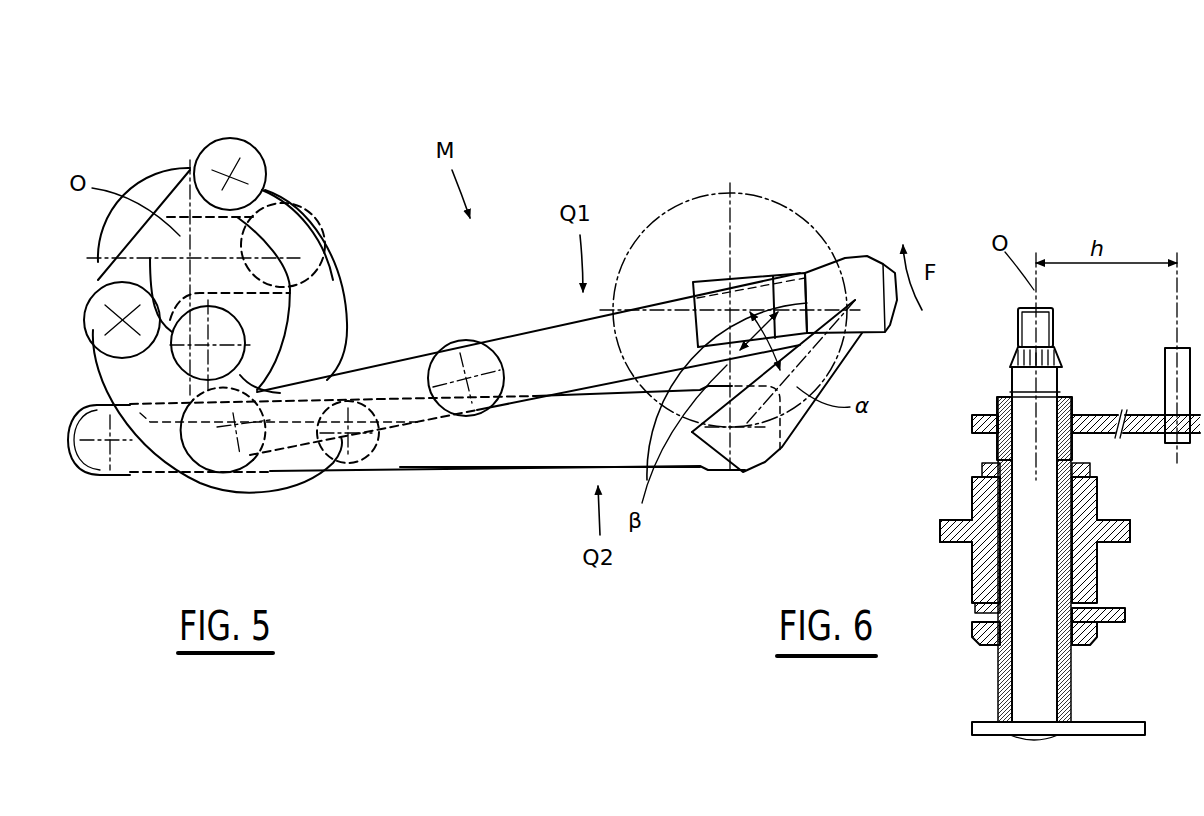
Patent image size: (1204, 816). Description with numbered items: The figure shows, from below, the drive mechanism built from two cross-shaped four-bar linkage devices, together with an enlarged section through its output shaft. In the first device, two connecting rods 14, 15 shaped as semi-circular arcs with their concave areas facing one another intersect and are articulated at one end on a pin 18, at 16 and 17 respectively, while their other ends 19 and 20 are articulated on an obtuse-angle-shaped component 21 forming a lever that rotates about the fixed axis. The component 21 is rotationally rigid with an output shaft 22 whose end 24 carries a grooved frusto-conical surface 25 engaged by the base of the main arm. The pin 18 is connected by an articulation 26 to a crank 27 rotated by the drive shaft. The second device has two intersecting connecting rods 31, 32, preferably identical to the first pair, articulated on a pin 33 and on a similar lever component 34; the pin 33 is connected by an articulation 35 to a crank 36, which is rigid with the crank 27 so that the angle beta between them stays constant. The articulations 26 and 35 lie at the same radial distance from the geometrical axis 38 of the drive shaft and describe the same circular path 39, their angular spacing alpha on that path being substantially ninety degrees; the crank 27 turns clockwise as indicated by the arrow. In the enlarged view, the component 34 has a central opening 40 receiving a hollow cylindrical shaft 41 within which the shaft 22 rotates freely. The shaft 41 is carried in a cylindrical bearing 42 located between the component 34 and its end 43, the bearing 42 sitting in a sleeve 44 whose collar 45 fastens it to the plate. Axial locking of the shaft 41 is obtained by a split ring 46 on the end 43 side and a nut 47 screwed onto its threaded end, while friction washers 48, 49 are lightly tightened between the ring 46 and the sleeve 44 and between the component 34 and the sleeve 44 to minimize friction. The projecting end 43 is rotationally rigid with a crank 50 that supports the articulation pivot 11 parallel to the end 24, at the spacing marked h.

In FIG. 6, the articulation pivot 11 is at (1170, 370).
In FIG. 5, the connecting rod 14 is at (400, 448).
In FIG. 5, the connecting rod 15 is at (328, 270).
In FIG. 5, the articulation of connecting rod 14 on pin 16 is at (467, 375).
In FIG. 5, the articulation of connecting rod 15 on pin 17 is at (247, 405).
In FIG. 5, the pin 18 is at (543, 350).
In FIG. 5, the end of connecting rod 14 19 is at (213, 340).
In FIG. 5, the end of connecting rod 15 20 is at (230, 180).
In FIG. 5, the component forming a lever 21 is at (168, 224).
In FIG. 6, the component forming a lever 21 is at (1100, 725).
In FIG. 6, the output shaft 22 is at (1030, 680).
In FIG. 6, the end of output shaft 24 is at (1062, 342).
In FIG. 6, the grooved frusto-conical surface 25 is at (1013, 355).
In FIG. 5, the articulation 26 is at (855, 257).
In FIG. 5, the crank 27 is at (750, 278).
In FIG. 5, the connecting rod 31 is at (282, 313).
In FIG. 5, the connecting rod 32 is at (265, 480).
In FIG. 5, the pin 33 is at (533, 447).
In FIG. 5, the component forming a lever 34 is at (132, 268).
In FIG. 6, the component forming a lever 34 is at (1105, 608).
In FIG. 5, the articulation 35 is at (748, 400).
In FIG. 5, the crank 36 is at (800, 390).
In FIG. 5, the geometrical axis of drive shaft 38 is at (735, 305).
In FIG. 5, the circular path 39 is at (802, 210).
In FIG. 6, the opening 40 is at (990, 640).
In FIG. 6, the hollow cylindrical shaft 41 is at (1078, 684).
In FIG. 6, the cylindrical bearing 42 is at (985, 555).
In FIG. 6, the end of hollow shaft 43 is at (997, 450).
In FIG. 6, the sleeve 44 is at (1098, 500).
In FIG. 6, the collar 45 is at (1120, 533).
In FIG. 6, the split ring 46 is at (1085, 458).
In FIG. 6, the nut 47 is at (1085, 635).
In FIG. 6, the friction washer 48 is at (982, 472).
In FIG. 6, the friction washer 49 is at (980, 605).
In FIG. 6, the crank 50 is at (1093, 428).